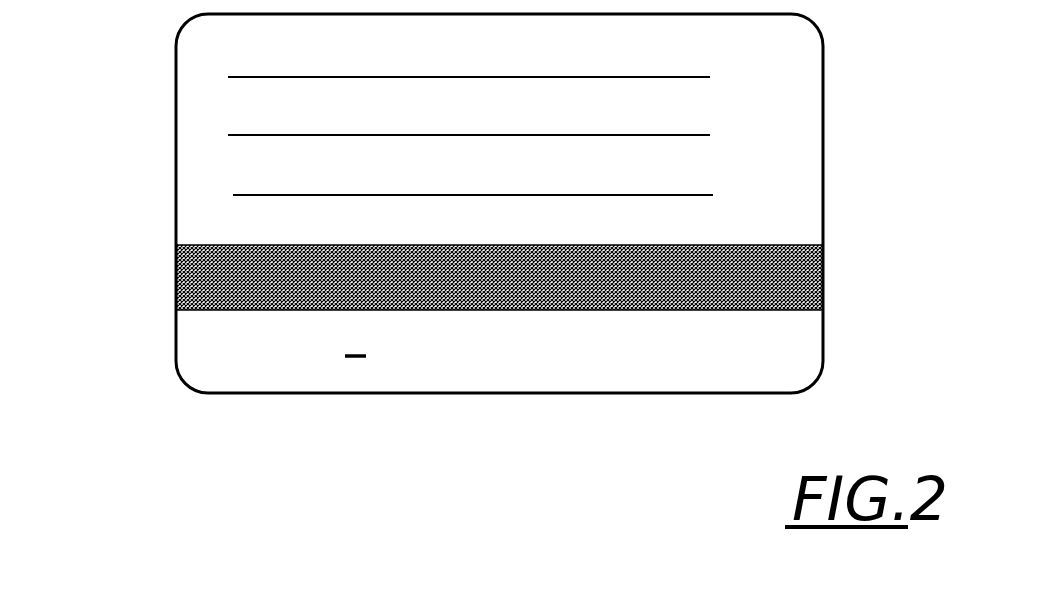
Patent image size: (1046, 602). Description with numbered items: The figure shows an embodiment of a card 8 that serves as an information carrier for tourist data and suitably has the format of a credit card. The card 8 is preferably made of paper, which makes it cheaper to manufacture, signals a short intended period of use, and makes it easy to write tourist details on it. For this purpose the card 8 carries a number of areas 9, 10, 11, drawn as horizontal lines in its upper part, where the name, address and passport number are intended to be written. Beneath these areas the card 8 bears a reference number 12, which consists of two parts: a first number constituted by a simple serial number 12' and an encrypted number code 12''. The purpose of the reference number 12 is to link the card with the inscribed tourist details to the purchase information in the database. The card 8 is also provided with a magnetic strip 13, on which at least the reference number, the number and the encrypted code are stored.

The card 8 is at (166, 168).
The area 9 is at (685, 77).
The area 10 is at (685, 135).
The area 11 is at (688, 195).
The reference number 12 is at (384, 411).
The serial number 12' is at (276, 411).
The encrypted number code 12'' is at (443, 411).
The magnetic strip 13 is at (195, 275).